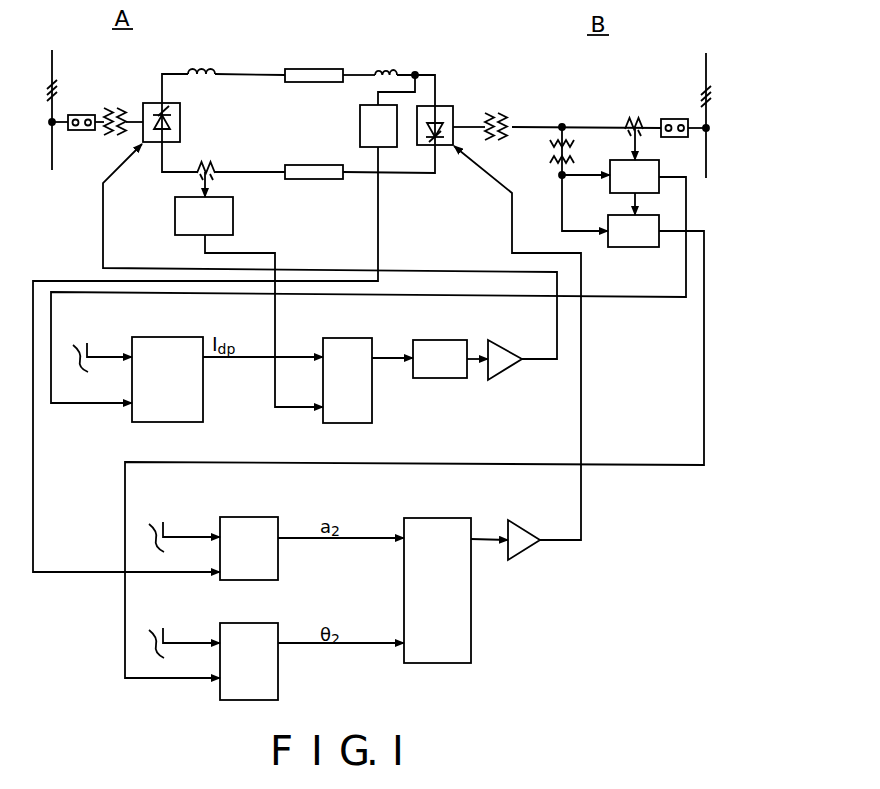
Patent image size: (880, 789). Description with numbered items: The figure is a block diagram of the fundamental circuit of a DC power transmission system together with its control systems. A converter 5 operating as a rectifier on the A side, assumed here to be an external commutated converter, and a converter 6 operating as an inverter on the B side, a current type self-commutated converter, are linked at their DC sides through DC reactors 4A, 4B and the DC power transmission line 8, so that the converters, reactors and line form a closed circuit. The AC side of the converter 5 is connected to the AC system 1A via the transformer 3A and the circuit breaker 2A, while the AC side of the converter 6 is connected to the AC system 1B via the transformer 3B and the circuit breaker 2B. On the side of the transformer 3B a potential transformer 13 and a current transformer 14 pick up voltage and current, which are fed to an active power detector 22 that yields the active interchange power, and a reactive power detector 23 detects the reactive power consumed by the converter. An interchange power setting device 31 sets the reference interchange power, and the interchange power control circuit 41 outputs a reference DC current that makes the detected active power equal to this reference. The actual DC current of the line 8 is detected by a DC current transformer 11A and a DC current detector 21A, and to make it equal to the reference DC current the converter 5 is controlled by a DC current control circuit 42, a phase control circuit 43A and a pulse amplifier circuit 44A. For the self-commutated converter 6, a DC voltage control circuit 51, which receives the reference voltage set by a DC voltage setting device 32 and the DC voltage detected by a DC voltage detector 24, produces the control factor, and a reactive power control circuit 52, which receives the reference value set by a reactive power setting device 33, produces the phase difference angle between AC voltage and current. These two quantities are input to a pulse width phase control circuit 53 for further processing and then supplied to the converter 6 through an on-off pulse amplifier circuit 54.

The AC system 1A is at (52, 64).
The circuit breaker 2A is at (82, 115).
The transformer 3A is at (114, 136).
The DC reactor 4A is at (200, 70).
The DC reactor 4B is at (388, 70).
The converter 5 is at (181, 118).
The converter 6 is at (454, 107).
The DC power transmission line 8 is at (315, 69).
The DC current transformer 11A is at (208, 163).
The DC current detector 21A is at (234, 221).
The DC voltage detector 24 is at (360, 127).
The transformer 3B is at (498, 110).
The potential transformer 13 is at (553, 150).
The current transformer 14 is at (627, 135).
The active power detector 22 is at (610, 187).
The reactive power detector 23 is at (633, 247).
The AC system 1B is at (706, 70).
The circuit breaker 2B is at (670, 119).
The interchange power setting device 31 is at (91, 362).
The DC voltage setting device 32 is at (173, 543).
The reactive power setting device 33 is at (173, 639).
The interchange power control circuit 41 is at (167, 337).
The DC current control circuit 42 is at (346, 338).
The phase control circuit 43A is at (440, 340).
The pulse amplifier circuit 44A is at (510, 345).
The DC voltage control circuit 51 is at (237, 517).
The reactive power control circuit 52 is at (237, 623).
The pulse width phase control circuit 53 is at (435, 518).
The on-off pulse amplifier circuit 54 is at (513, 525).